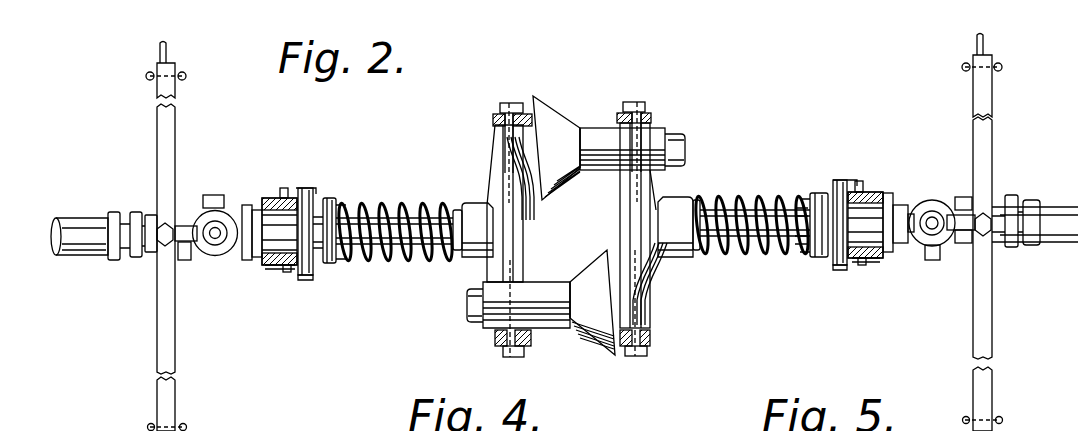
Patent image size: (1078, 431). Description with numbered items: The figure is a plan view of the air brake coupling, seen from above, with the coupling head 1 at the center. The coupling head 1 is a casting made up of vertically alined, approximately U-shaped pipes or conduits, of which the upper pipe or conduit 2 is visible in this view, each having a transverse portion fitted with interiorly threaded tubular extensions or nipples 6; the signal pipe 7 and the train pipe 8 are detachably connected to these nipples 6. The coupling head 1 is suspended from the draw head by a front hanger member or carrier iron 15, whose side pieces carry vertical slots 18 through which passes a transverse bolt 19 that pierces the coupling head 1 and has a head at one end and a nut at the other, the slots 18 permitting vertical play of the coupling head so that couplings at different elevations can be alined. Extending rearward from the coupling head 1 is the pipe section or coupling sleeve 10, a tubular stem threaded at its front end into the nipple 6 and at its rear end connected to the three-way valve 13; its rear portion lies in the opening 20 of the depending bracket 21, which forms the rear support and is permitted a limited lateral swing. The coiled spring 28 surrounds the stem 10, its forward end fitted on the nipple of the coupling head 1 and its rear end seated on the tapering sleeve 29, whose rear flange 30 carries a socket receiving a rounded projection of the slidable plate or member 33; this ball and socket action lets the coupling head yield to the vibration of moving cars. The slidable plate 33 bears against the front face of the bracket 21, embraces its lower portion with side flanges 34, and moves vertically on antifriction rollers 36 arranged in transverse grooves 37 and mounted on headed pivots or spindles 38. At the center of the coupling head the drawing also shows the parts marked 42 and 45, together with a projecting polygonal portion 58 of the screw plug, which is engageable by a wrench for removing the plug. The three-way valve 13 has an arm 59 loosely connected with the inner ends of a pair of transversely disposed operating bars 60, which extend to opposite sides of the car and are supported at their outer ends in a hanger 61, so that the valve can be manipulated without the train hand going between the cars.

The coupling head 1 is at (579, 126).
The upper pipe or conduit 2 is at (587, 231).
The tubular extension or nipple 6 is at (577, 225).
The signal pipe 7 is at (455, 262).
The train pipe 8 is at (86, 254).
The pipe section or coupling sleeve 10 is at (410, 262).
The three-way valve 13 is at (213, 258).
The front hanger member or carrier iron 15 is at (495, 137).
The vertical slot 18 is at (655, 113).
The transverse bolt 19 is at (511, 102).
The opening of bracket 20 is at (270, 262).
The bracket 21 is at (272, 198).
The coiled spring 28 is at (400, 202).
The tapering sleeve 29 is at (348, 267).
The flange 30 is at (332, 197).
The slidable plate or member 33 is at (318, 265).
The side flanges 34 is at (283, 188).
The rollers 36 is at (306, 190).
The transverse grooves 37 is at (300, 268).
The pivots or spindles 38 is at (302, 273).
The hub body 42 is at (574, 228).
The cone 45 is at (574, 225).
The projecting polygonal portion 58 is at (686, 148).
The arm 59 is at (960, 245).
The operating bars 60 is at (157, 158).
The hanger 61 is at (183, 80).